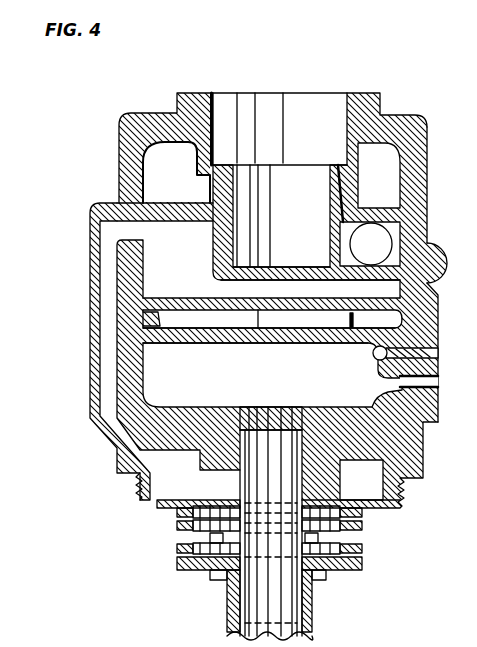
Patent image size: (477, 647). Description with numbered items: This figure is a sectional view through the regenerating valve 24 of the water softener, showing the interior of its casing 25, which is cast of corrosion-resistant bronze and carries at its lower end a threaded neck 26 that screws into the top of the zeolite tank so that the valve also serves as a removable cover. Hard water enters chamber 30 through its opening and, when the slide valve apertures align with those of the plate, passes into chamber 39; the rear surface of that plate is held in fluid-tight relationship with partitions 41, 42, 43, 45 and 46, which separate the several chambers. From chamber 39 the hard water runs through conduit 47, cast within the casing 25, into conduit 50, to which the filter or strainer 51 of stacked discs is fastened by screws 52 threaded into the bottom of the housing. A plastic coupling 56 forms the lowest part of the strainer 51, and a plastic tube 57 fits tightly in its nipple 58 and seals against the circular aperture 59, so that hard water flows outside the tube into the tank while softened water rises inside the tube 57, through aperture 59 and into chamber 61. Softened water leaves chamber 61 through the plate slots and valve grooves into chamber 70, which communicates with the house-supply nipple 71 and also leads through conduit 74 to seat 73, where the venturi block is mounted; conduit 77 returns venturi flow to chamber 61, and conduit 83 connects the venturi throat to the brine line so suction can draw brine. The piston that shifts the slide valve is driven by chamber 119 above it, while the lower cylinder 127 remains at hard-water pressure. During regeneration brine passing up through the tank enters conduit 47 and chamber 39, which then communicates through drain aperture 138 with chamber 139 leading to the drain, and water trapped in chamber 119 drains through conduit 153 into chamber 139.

The regenerating valve 24 is at (420, 122).
The casing 25 is at (428, 152).
The threaded neck 26 is at (403, 491).
The chamber 30 is at (157, 180).
The chamber 39 is at (181, 264).
The partition 41 is at (362, 308).
The partition 42 is at (297, 271).
The partition 43 is at (255, 335).
The partition 45 is at (213, 220).
The partition 46 is at (367, 207).
The conduit 47 is at (112, 328).
The conduit 50 is at (157, 507).
The filter or strainer 51 is at (363, 553).
The screws 52 is at (217, 541).
The plastic coupling 56 is at (310, 598).
The plastic tube 57 is at (332, 478).
The nipple 58 is at (223, 600).
The circular aperture 59 is at (243, 417).
The chamber 61 is at (204, 369).
The chamber 70 is at (315, 320).
The nipple 71 is at (155, 316).
The seat 73 is at (441, 297).
The conduit 74 is at (428, 318).
The conduit 77 is at (402, 383).
The conduit 83 is at (438, 354).
The chamber 119 is at (213, 112).
The cylinder 127 is at (252, 250).
The drain aperture 138 is at (388, 228).
The chamber 139 is at (400, 240).
The conduit 153 is at (340, 167).